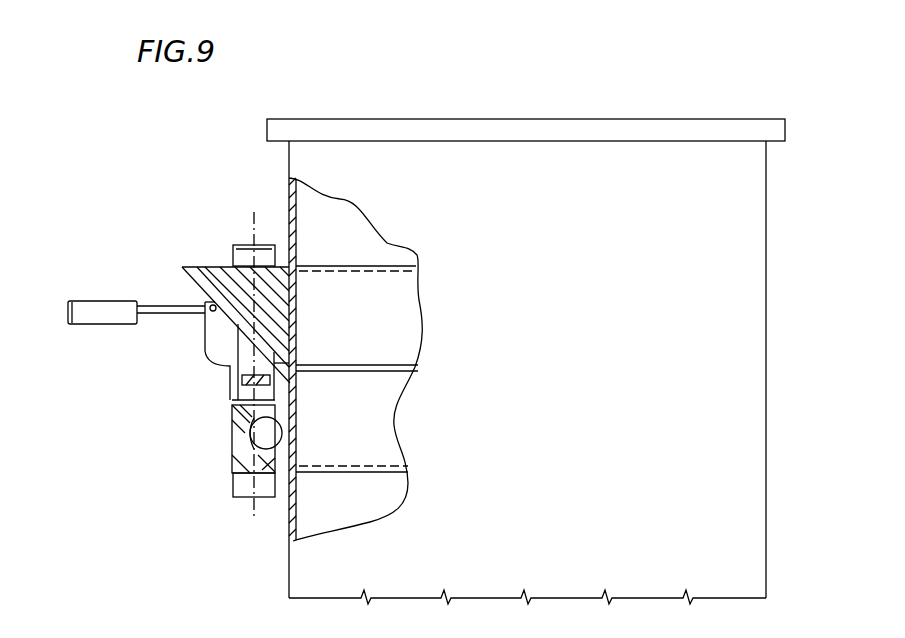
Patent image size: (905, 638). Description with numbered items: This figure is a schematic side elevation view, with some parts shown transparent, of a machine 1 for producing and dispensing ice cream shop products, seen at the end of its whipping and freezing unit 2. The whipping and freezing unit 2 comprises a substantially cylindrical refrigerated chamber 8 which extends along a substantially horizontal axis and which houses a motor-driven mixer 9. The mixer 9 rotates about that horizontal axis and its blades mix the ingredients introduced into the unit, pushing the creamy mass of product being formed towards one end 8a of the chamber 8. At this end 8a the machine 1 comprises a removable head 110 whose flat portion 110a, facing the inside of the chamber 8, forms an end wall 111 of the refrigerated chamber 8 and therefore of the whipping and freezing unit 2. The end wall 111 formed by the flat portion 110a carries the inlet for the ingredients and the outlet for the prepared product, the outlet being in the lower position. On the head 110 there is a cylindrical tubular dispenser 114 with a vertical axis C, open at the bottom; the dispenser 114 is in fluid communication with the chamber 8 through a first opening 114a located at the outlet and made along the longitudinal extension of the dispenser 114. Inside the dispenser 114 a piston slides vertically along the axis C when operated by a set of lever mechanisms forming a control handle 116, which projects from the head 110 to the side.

The machine 1 is at (722, 72).
The whipping and freezing unit 2 is at (395, 475).
The refrigerated chamber 8 is at (398, 318).
The end of the chamber 8a is at (297, 282).
The motor-driven mixer 9 is at (404, 361).
The removable head 110 is at (192, 405).
The flat portion 110a is at (284, 322).
The end wall 111 is at (282, 400).
The cylindrical tubular dispenser 114 is at (232, 385).
The first opening 114a is at (262, 440).
The control handle 116 is at (86, 308).
The vertical axis of the dispenser C is at (250, 218).